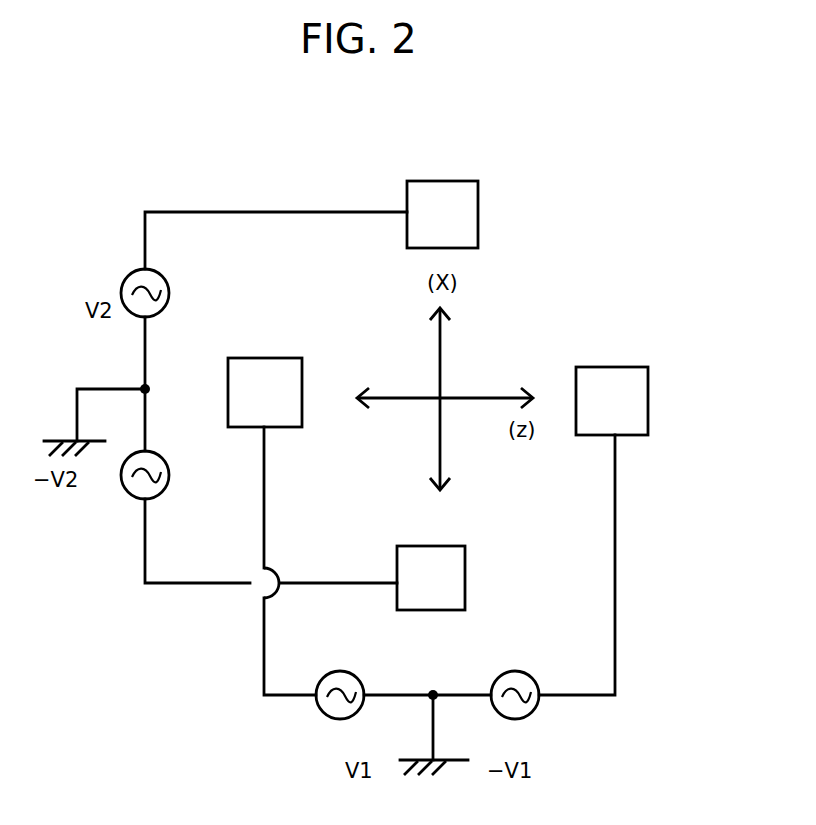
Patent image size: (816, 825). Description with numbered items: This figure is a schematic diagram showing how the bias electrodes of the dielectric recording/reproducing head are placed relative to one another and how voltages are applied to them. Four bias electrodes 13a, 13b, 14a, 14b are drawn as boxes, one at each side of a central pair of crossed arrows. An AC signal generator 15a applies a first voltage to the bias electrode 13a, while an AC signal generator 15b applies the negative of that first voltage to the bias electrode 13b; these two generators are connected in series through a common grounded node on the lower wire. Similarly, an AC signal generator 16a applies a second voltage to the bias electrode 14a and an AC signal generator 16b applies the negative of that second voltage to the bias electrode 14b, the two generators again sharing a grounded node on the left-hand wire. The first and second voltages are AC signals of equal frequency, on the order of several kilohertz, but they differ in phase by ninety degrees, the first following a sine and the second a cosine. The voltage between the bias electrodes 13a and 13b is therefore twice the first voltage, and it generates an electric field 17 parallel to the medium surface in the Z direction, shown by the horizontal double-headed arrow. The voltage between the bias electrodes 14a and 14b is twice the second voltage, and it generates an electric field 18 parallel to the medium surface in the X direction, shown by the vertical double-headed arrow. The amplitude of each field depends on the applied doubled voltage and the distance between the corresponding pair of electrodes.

The bias electrode 13a is at (272, 358).
The bias electrode 13b is at (648, 400).
The bias electrode 14a is at (478, 212).
The bias electrode 14b is at (453, 545).
The AC signal generator 15a is at (336, 672).
The AC signal generator 15b is at (507, 670).
The AC signal generator 16a is at (168, 288).
The AC signal generator 16b is at (124, 492).
The electric field 17 is at (385, 400).
The electric field 18 is at (440, 345).